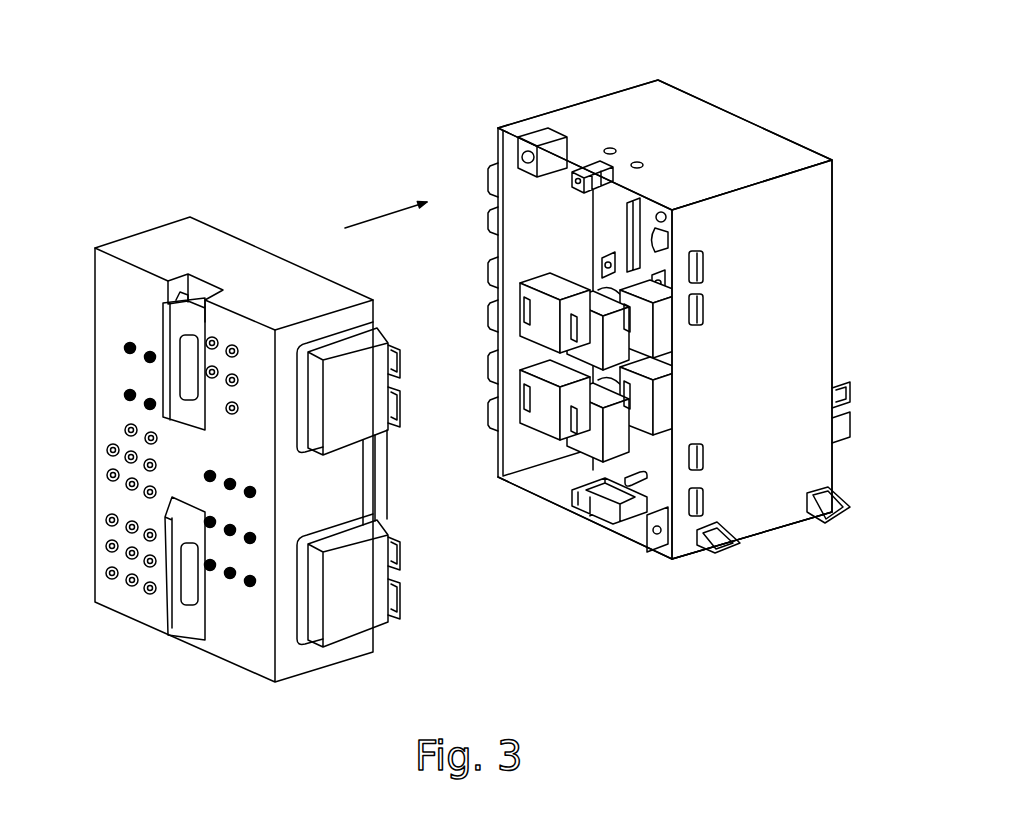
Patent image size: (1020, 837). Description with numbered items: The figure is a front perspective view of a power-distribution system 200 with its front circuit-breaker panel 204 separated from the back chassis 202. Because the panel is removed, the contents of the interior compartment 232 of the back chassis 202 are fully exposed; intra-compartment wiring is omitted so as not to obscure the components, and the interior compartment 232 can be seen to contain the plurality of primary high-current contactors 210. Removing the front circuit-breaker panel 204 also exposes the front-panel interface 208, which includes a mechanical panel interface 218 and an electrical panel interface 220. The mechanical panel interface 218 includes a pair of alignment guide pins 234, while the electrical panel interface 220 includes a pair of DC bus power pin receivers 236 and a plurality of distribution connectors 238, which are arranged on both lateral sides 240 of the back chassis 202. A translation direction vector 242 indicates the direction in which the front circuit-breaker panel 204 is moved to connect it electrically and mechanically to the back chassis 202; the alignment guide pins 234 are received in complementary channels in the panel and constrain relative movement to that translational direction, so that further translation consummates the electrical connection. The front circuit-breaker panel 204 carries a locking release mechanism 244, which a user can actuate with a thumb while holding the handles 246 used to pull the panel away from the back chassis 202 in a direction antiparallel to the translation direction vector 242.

The power-distribution system 200 is at (177, 100).
The back chassis 202 is at (670, 118).
The front circuit-breaker panel 204 is at (235, 258).
The front-panel interface 208 is at (665, 567).
The primary high-current contactors 210 is at (593, 437).
The mechanical panel interface 218 is at (570, 485).
The electrical panel interface 220 is at (548, 135).
The interior compartment 232 is at (528, 190).
The alignment guide pins 234 is at (585, 167).
The DC bus power pin receivers 236 is at (517, 143).
The distribution connectors 238 is at (488, 312).
The lateral sides 240 is at (772, 490).
The translation direction vector 242 is at (385, 215).
The locking release mechanism 244 is at (173, 300).
The handles 246 is at (187, 403).